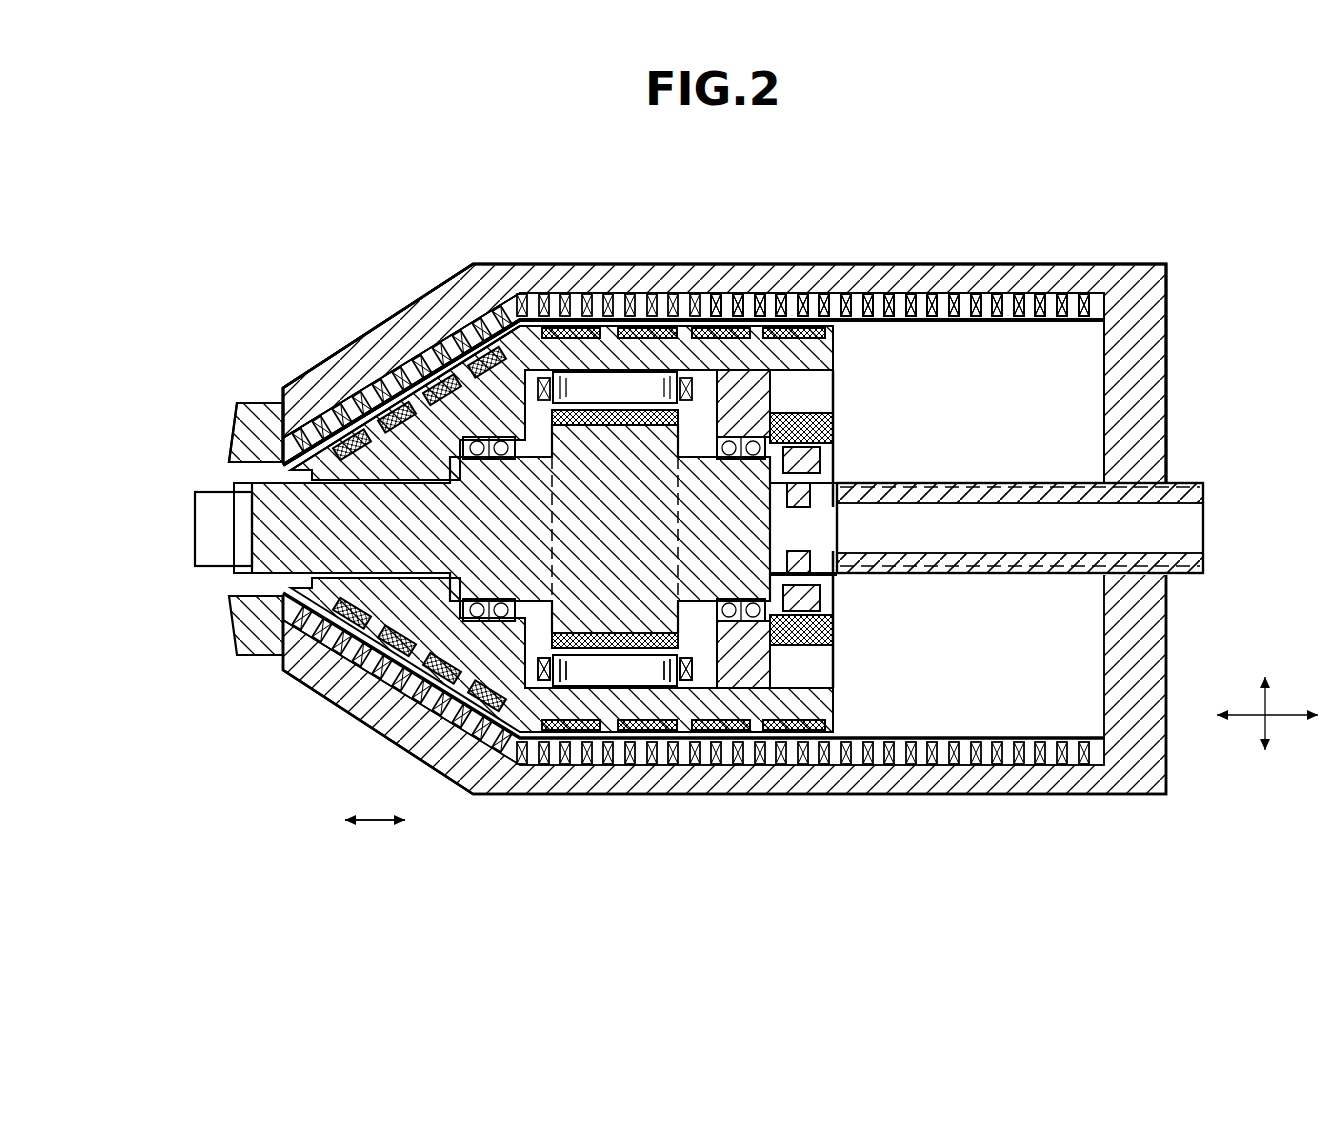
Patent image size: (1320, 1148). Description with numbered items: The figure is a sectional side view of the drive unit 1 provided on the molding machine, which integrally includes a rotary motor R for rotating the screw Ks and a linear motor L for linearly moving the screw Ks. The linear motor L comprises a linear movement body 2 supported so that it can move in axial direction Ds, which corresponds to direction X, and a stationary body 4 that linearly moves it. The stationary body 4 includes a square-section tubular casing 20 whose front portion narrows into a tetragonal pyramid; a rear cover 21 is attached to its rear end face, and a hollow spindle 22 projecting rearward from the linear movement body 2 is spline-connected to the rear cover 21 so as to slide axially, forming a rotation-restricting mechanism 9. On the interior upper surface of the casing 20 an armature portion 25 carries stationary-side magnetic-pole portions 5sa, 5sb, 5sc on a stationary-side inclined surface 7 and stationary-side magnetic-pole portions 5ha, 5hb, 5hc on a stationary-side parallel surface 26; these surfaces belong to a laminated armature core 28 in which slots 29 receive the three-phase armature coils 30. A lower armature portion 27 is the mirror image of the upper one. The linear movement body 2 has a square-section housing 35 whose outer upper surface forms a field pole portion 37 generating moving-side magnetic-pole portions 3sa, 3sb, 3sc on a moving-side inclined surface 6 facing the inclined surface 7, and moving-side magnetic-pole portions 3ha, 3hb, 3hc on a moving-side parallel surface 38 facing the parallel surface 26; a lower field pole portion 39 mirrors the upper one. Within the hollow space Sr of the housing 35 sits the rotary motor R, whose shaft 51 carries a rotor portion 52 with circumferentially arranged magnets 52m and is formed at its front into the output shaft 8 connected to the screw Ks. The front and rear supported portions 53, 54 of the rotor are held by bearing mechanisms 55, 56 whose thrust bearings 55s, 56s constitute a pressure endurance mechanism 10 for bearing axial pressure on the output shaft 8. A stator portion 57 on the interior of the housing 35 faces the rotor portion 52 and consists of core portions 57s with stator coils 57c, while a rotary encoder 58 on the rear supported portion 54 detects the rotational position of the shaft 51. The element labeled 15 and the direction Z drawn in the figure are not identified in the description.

The drive unit 1 is at (1187, 228).
The linear movement body 2 is at (840, 770).
The moving-side magnetic-pole portion 3sa is at (357, 438).
The moving-side magnetic-pole portion 3sb is at (400, 410).
The moving-side magnetic-pole portion 3sc is at (445, 382).
The moving-side magnetic-pole portion 3ha is at (572, 330).
The moving-side magnetic-pole portion 3hb is at (718, 330).
The moving-side magnetic-pole portion 3hc is at (775, 330).
The stationary body 4 is at (1005, 320).
The stationary-side magnetic-pole portion 5sa is at (310, 438).
The stationary-side magnetic-pole portion 5sb is at (348, 418).
The stationary-side magnetic-pole portion 5sc is at (388, 393).
The stationary-side magnetic-pole portion 5ha is at (548, 296).
The stationary-side magnetic-pole portion 5hb is at (640, 296).
The stationary-side magnetic-pole portion 5hc is at (700, 296).
The moving-side inclined surface 6 is at (476, 346).
The stationary-side inclined surface 7 is at (490, 322).
The output shaft 8 is at (270, 598).
The rotation-restricting mechanism 9 is at (1090, 579).
The pressure endurance mechanism 10 is at (836, 720).
The end plate 15 is at (235, 658).
The casing 20 is at (1010, 293).
The rear cover 21 is at (1168, 310).
The spindle 22 is at (1185, 575).
The armature portion 25 is at (887, 321).
The stationary-side parallel surface 26 is at (1040, 322).
The armature portion 27 is at (916, 744).
The armature core 28 is at (1036, 322).
The slots 29 is at (232, 462).
The armature coils 30 is at (262, 420).
The housing 35 is at (862, 340).
The field pole portion 37 is at (812, 345).
The moving-side parallel surface 38 is at (770, 296).
The field pole portion 39 is at (643, 700).
The shaft 51 is at (412, 590).
The rotor portion 52 is at (745, 645).
The magnets 52m is at (598, 652).
The supported portion 53 is at (560, 700).
The supported portion 54 is at (836, 650).
The bearing mechanism 55 is at (548, 680).
The thrust bearing 55s is at (470, 700).
The bearing mechanism 56 is at (760, 645).
The thrust bearing 56s is at (778, 386).
The stator portion 57 is at (705, 648).
The core portions 57s is at (620, 652).
The stator coils 57c is at (740, 700).
The rotary encoder 58 is at (825, 600).
The axial direction Ds is at (368, 822).
The screw Ks is at (215, 575).
The linear motor L is at (790, 802).
The rotary motor R is at (851, 442).
The hollow space Sr is at (395, 607).
The direction X is at (1240, 717).
The Z axis Z is at (1265, 703).